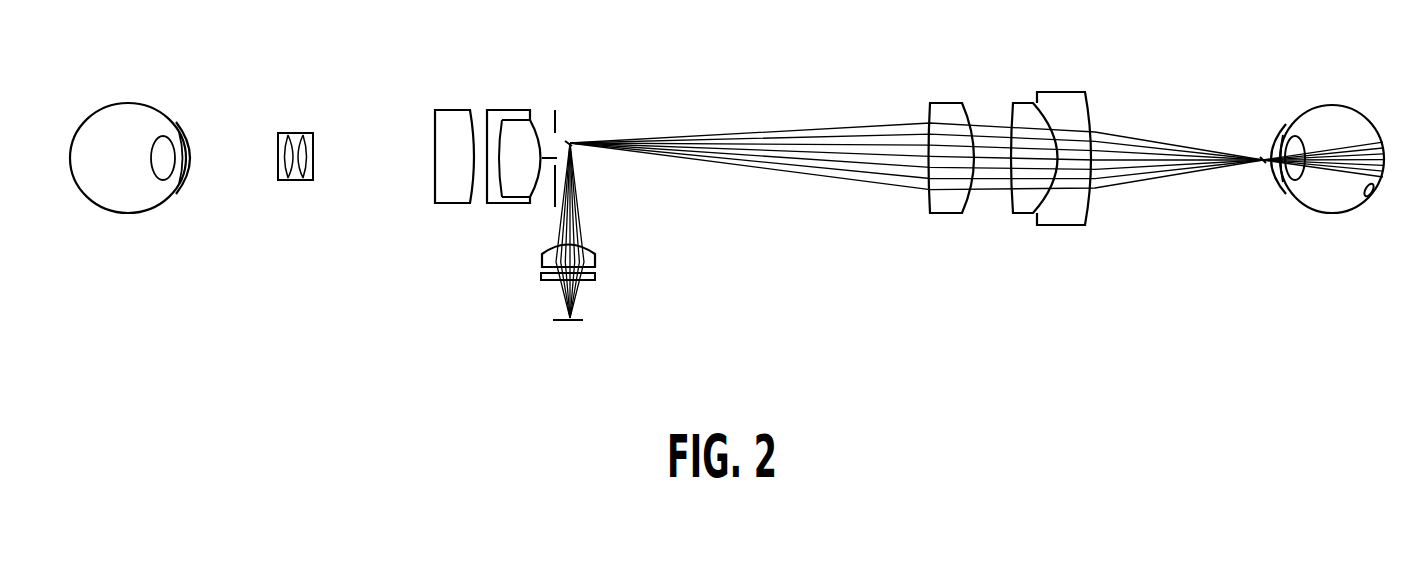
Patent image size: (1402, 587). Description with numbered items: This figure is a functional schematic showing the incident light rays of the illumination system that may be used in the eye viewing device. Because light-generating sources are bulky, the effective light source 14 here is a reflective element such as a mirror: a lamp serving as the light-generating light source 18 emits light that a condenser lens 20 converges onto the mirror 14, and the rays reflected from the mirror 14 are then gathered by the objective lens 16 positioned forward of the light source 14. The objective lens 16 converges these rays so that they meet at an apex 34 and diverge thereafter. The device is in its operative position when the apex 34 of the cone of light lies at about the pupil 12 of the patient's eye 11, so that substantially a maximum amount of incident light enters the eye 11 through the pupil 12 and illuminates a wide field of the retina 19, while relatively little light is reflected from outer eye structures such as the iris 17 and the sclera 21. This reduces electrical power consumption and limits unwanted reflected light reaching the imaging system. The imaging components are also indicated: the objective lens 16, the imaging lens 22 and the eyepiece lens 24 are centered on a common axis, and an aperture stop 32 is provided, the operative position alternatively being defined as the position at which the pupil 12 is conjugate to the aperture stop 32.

The eye 11 is at (1353, 102).
The pupil 12 is at (1270, 152).
The light source 14 is at (572, 140).
The objective lens 16 is at (1031, 80).
The iris 17 is at (1277, 172).
The light-generating light source 18 is at (577, 319).
The retina 19 is at (1366, 202).
The condenser lens 20 is at (598, 245).
The sclera 21 is at (1281, 135).
The imaging lens 22 is at (495, 106).
The eyepiece lens 24 is at (200, 108).
The aperture stop 32 is at (558, 124).
The apex 34 is at (1259, 165).